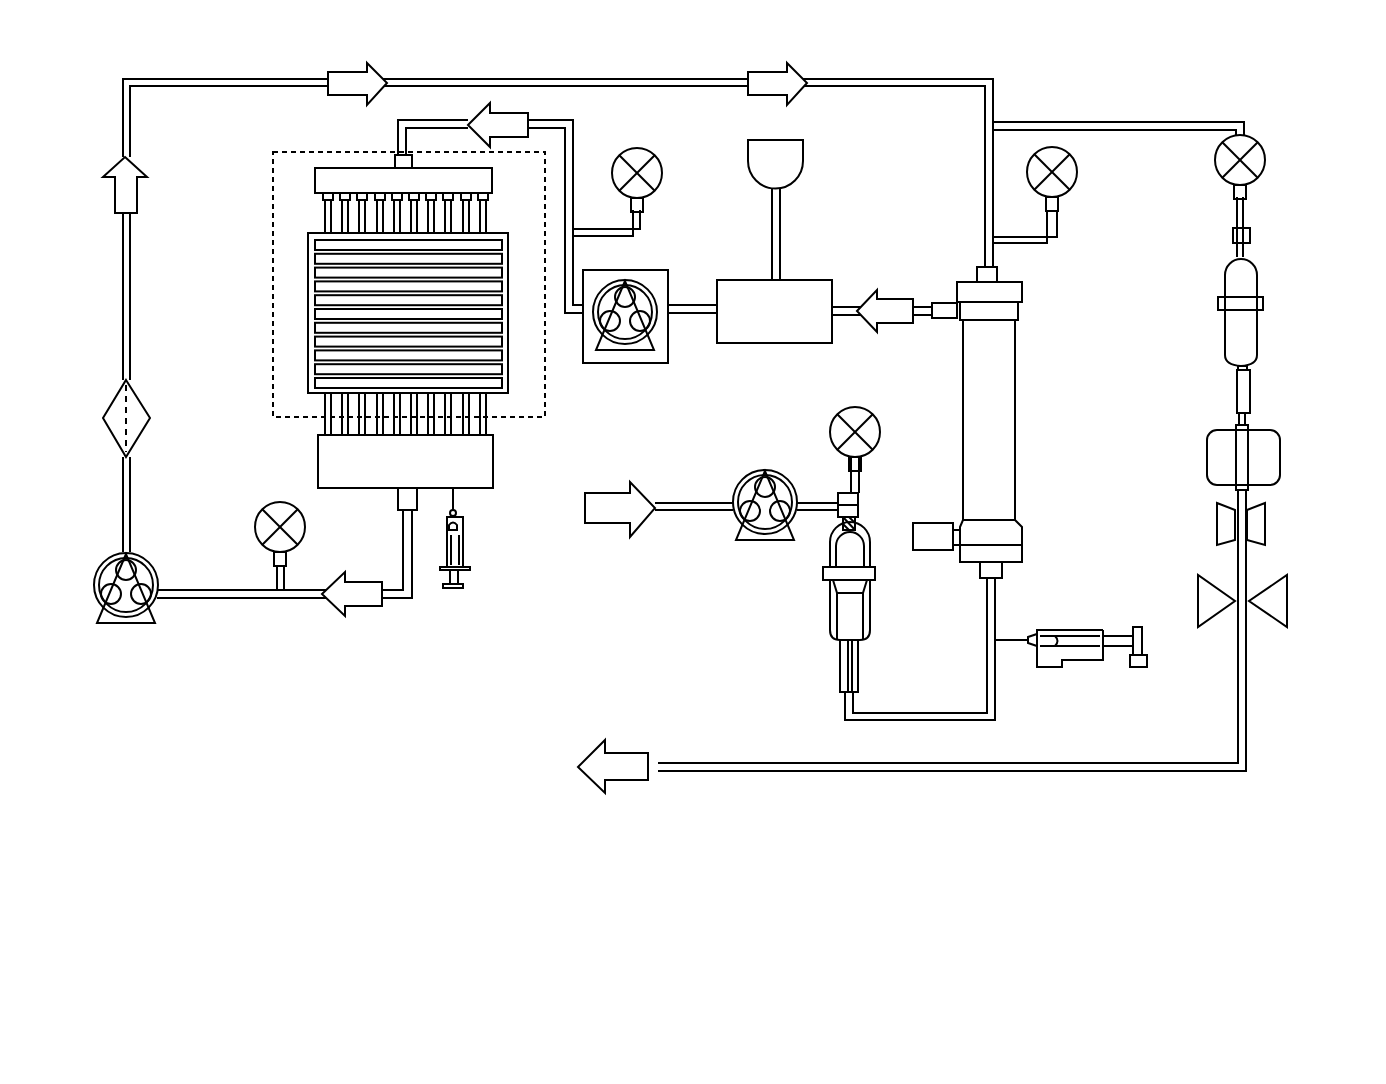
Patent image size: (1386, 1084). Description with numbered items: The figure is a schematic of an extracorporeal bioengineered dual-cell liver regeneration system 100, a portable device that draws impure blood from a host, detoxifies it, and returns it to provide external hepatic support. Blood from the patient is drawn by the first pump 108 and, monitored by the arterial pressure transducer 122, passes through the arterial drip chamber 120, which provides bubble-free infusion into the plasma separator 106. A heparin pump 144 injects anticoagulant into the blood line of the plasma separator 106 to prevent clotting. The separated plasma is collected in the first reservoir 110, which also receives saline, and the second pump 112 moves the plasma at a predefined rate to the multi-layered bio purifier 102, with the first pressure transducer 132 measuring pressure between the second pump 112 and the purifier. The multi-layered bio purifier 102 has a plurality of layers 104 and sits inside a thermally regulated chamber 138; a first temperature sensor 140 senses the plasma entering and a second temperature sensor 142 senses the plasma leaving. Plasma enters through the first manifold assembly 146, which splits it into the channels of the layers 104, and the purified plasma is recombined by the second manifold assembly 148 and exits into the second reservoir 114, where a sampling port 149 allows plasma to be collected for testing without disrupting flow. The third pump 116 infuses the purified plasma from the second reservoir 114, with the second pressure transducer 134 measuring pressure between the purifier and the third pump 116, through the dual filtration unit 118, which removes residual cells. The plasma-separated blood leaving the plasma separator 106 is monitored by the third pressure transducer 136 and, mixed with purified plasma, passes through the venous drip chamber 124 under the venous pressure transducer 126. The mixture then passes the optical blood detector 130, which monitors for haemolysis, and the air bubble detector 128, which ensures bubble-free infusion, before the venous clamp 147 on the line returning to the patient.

The extracorporeal bioengineered dual-cell liver regeneration (EBDLR) system 100 is at (710, 504).
The multi-layered bio purifier 102 is at (273, 217).
The plurality of layers 104 is at (315, 284).
The plasma separator 106 is at (1022, 365).
The first pump 108 is at (765, 540).
The first reservoir 110 is at (803, 280).
The second pump 112 is at (658, 363).
The second reservoir 114 is at (345, 488).
The third pump 116 is at (128, 625).
The dual filtration unit 118 is at (103, 428).
The arterial drip chamber 120 is at (832, 617).
The arterial pressure transducer 122 is at (829, 432).
The venous drip chamber 124 is at (1257, 283).
The venous pressure transducer 126 is at (1265, 160).
The air bubble detector 128 is at (1268, 522).
The optical blood detector 130 is at (1282, 452).
The first pressure transducer 132 is at (640, 148).
The second pressure transducer 134 is at (255, 527).
The third pressure transducer 136 is at (1077, 172).
The thermally regulated chamber 138 is at (308, 333).
The first temperature sensor 140 is at (303, 256).
The second temperature sensor 142 is at (514, 372).
The heparin pump 144 is at (1085, 667).
The first manifold assembly 146 is at (315, 180).
The venous clamp 147 is at (1287, 620).
The second manifold assembly 148 is at (322, 399).
The sampling port 149 is at (463, 586).